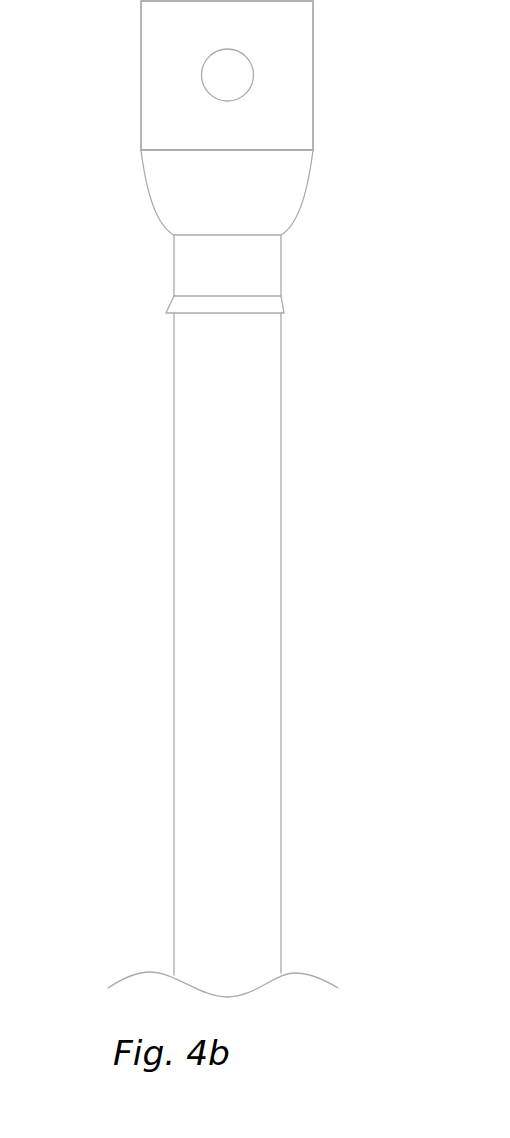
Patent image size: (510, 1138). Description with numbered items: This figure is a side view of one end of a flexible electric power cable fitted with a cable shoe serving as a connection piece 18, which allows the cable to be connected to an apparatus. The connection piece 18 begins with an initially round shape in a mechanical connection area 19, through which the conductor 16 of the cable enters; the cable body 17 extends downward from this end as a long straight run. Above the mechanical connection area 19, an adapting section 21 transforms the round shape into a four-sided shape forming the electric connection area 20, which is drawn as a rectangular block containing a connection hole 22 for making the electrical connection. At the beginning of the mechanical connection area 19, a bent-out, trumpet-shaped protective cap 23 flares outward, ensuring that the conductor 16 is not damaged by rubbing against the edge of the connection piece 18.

The conductor 16 is at (129, 711).
The shaft 17 is at (195, 463).
The connection piece 18 is at (141, 142).
The mechanical connection area 19 is at (270, 267).
The electric connection area 20 is at (313, 14).
The adapting section 21 is at (293, 192).
The connection hole 22 is at (252, 82).
The protective cap 23 is at (282, 303).